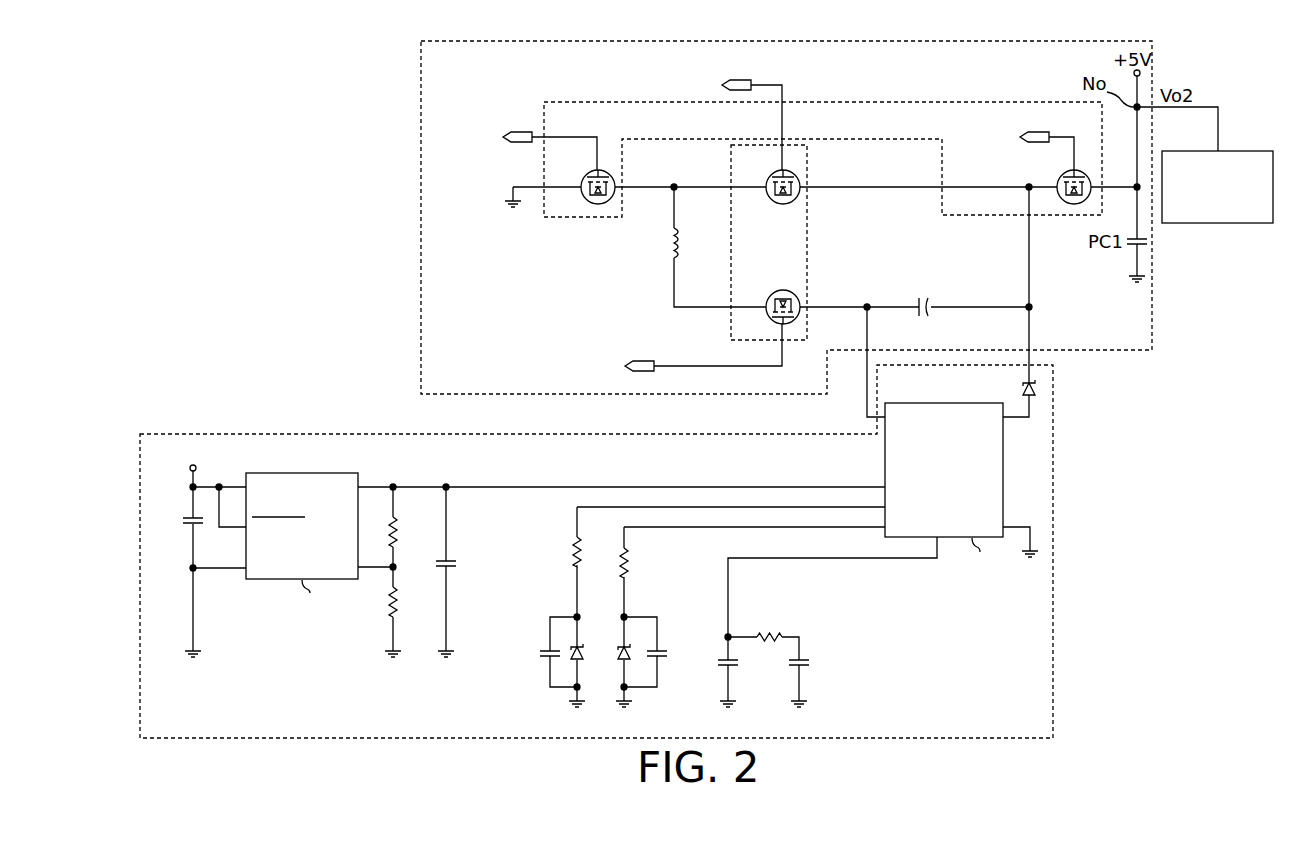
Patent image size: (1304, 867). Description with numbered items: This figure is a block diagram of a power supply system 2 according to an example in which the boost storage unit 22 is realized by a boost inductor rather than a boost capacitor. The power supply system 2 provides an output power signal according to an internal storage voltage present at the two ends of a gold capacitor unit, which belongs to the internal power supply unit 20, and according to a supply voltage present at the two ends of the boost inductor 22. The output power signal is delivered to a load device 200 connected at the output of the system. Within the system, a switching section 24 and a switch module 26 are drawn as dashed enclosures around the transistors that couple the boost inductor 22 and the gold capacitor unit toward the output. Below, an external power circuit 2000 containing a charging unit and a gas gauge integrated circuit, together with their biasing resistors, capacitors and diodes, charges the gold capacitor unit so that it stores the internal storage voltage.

The power supply system 2 is at (1152, 318).
The internal power supply unit 20 is at (966, 293).
The boost storage unit 22 is at (665, 224).
The switching unit 24 is at (800, 140).
The switch module 26 is at (825, 101).
The load device 200 is at (1245, 150).
The external power circuit 2000 is at (1054, 560).